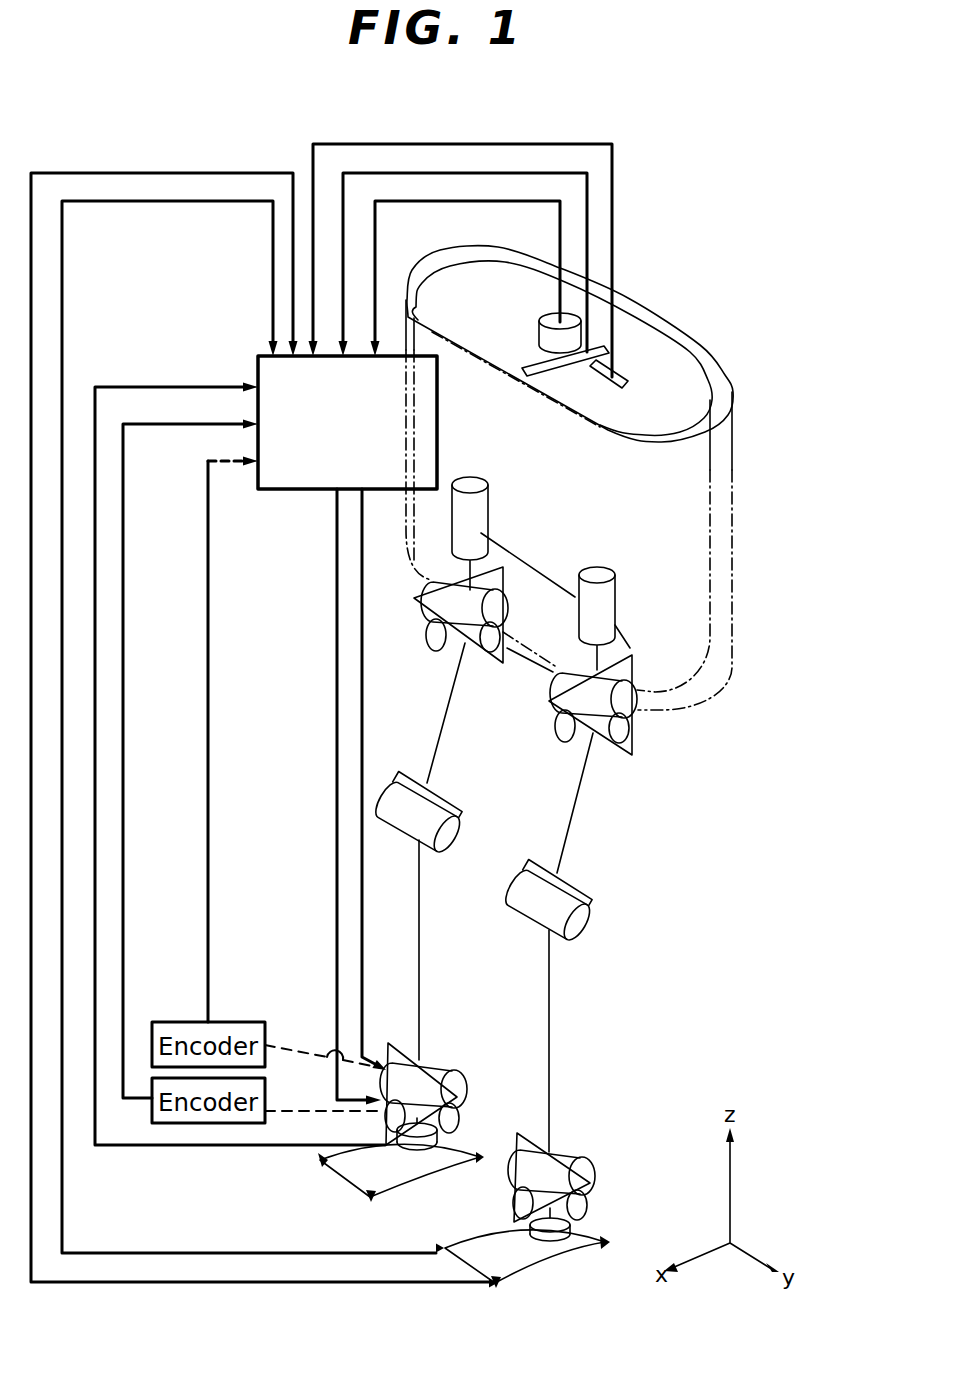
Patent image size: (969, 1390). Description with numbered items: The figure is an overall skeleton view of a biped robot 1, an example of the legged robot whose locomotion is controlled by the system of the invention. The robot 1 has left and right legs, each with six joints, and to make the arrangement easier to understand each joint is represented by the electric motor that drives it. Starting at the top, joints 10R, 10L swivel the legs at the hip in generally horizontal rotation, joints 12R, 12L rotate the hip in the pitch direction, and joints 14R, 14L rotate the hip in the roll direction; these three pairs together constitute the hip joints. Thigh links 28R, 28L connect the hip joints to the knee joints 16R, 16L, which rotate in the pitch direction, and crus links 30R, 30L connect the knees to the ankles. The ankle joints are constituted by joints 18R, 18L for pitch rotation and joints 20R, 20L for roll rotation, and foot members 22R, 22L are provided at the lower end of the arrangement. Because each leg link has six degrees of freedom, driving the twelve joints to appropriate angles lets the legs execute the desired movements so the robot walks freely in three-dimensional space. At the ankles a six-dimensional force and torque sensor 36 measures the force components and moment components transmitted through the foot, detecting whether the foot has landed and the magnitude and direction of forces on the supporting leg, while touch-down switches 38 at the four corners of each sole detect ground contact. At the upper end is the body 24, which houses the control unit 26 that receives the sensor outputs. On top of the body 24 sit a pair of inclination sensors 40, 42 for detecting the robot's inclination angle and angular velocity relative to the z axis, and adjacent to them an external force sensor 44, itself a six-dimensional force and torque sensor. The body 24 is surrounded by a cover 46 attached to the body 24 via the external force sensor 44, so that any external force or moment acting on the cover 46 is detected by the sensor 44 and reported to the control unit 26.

The biped robot 1 is at (662, 308).
The control unit 26 is at (258, 368).
The external force sensor 44 is at (540, 330).
The inclination sensor 40 is at (565, 365).
The inclination sensor 42 is at (625, 385).
The cover 46 is at (735, 530).
The body 24 is at (708, 590).
The hip swiveling joint 10R is at (472, 486).
The hip swiveling joint 10L is at (598, 573).
The hip pitch joint 12R is at (497, 630).
The hip pitch joint 12L is at (626, 728).
The hip roll joint 14R is at (433, 645).
The hip roll joint 14L is at (552, 735).
The thigh link 28R is at (450, 710).
The thigh link 28L is at (588, 780).
The knee pitch joint 16R is at (450, 846).
The knee pitch joint 16L is at (584, 918).
The crus link 30R is at (420, 957).
The crus link 30L is at (549, 1030).
The ankle roll joint 20R is at (465, 1085).
The ankle roll joint 20L is at (585, 1172).
The ankle pitch joint 18R is at (441, 1132).
The ankle pitch joint 18L is at (590, 1195).
The foot member 22R is at (357, 1170).
The foot member 22L is at (528, 1258).
The six-dimensional force and torque sensor 36 is at (413, 1150).
The touch-down switch 38 is at (368, 1196).